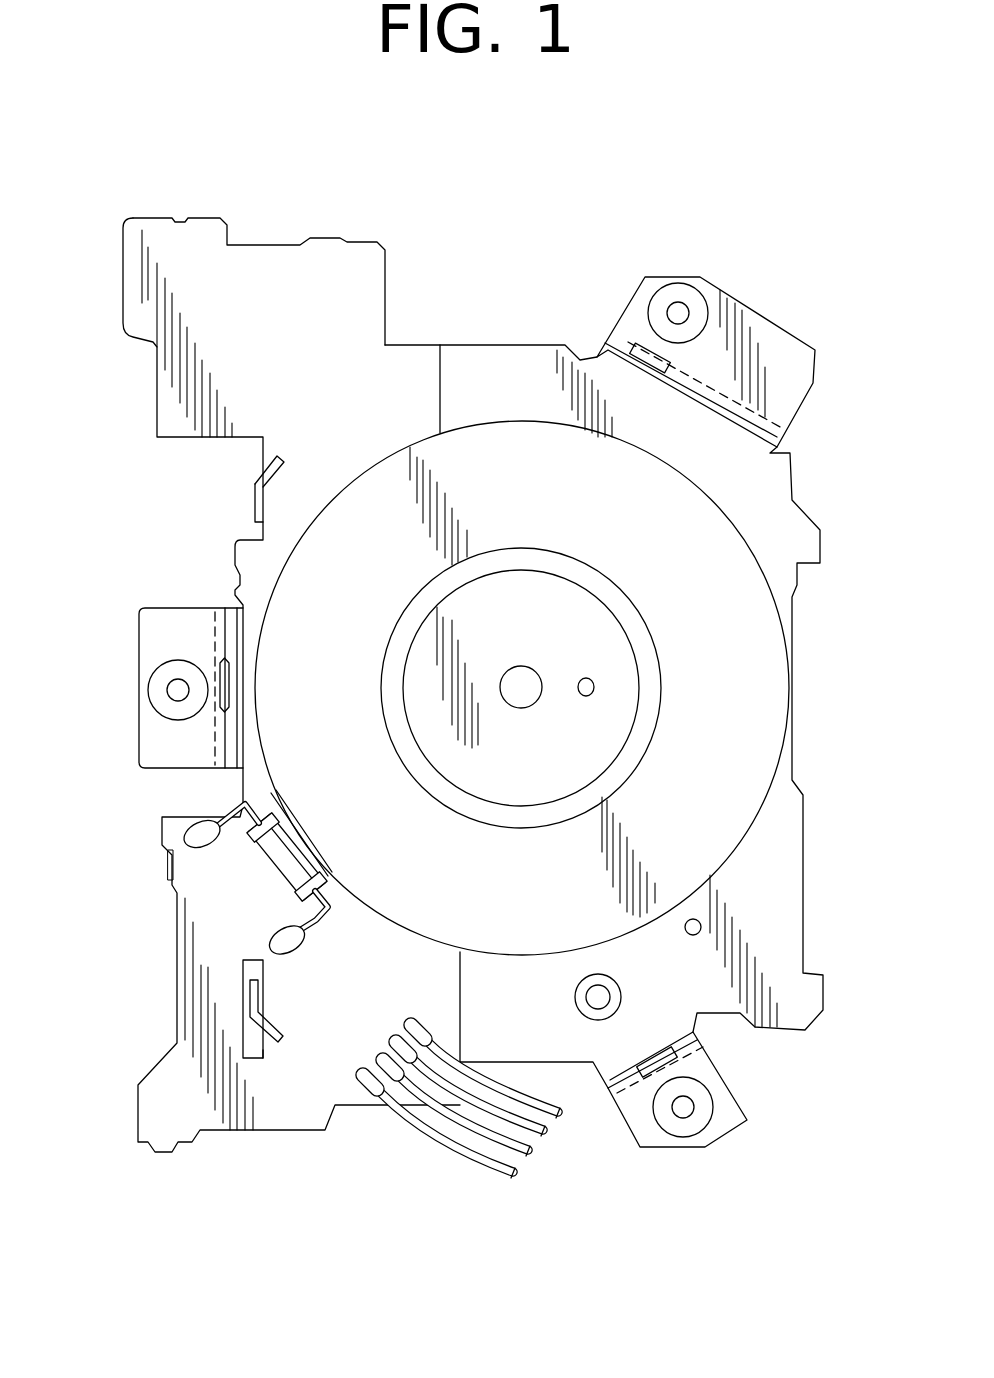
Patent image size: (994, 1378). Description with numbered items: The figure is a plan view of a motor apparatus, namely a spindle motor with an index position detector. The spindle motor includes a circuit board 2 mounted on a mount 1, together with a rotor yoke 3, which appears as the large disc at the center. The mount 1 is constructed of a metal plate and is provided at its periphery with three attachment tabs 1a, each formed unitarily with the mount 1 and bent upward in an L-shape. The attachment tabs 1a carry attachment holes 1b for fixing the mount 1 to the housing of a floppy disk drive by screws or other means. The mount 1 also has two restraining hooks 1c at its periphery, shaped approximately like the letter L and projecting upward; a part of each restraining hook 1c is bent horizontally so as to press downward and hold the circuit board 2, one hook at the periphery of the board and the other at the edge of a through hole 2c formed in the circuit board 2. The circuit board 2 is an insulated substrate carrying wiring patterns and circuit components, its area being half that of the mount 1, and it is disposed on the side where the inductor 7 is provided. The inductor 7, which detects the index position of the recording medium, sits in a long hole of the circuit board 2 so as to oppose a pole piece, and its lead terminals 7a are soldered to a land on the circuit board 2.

The mount 1 is at (498, 363).
The attachment tab 1a is at (773, 345).
The attachment hole 1b is at (677, 315).
The restraining hook 1c is at (253, 498).
The circuit board 2 is at (281, 300).
The through hole 2c is at (262, 1050).
The rotor yoke 3 is at (330, 556).
The inductor 7 is at (215, 850).
The lead terminal 7a is at (240, 800).